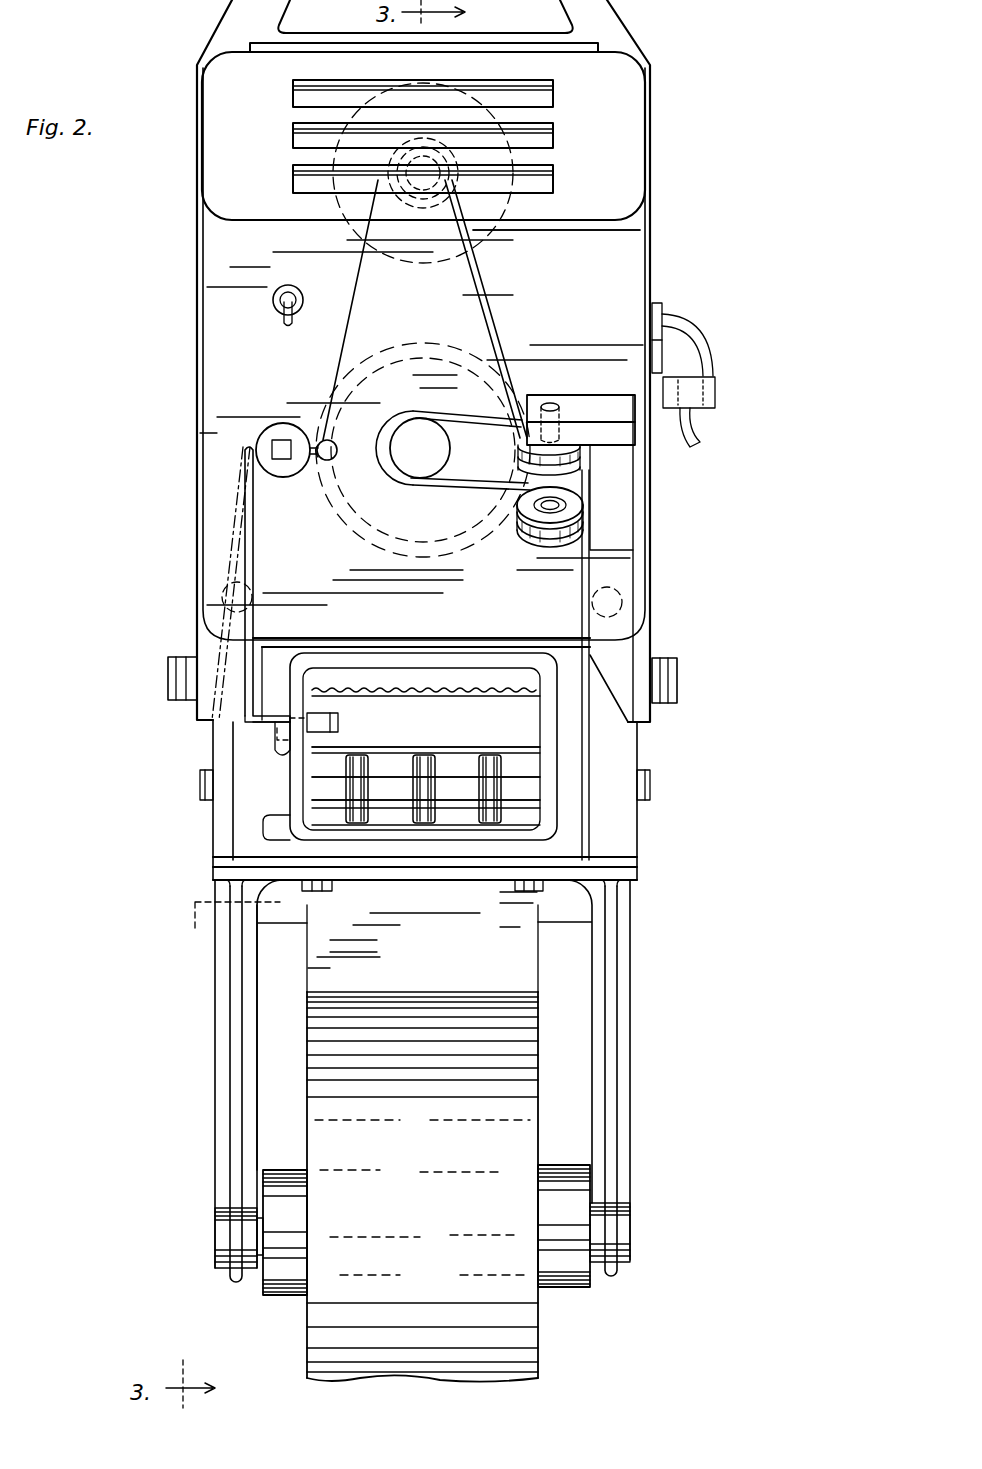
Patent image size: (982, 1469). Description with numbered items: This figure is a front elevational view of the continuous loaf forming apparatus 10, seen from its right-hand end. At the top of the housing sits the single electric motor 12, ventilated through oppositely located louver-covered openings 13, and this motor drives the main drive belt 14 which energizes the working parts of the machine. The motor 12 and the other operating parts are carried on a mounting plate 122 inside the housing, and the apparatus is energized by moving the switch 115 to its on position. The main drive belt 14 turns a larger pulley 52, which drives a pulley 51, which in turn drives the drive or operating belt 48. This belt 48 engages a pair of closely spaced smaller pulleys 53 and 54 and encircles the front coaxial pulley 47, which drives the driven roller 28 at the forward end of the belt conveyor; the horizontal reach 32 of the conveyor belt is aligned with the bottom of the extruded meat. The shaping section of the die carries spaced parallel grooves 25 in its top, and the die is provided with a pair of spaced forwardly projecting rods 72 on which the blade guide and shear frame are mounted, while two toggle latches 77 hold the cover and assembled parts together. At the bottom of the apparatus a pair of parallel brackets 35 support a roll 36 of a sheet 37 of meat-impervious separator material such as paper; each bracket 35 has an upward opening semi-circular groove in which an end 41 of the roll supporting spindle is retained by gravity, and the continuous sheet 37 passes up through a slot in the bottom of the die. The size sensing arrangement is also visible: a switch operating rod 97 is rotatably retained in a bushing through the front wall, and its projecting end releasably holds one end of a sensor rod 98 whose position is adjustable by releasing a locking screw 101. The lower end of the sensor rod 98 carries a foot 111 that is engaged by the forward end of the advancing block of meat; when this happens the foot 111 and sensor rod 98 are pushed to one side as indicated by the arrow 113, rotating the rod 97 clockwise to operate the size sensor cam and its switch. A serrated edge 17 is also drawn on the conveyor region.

The loaf forming apparatus 10 is at (678, 252).
The electric motor 12 is at (527, 208).
The louver-covered openings 13 is at (545, 183).
The main drive belt 14 is at (497, 318).
The serrated edge 17 is at (406, 690).
The grooves 25 is at (426, 730).
The driven roller 28 is at (463, 766).
The horizontal reach 32 is at (362, 823).
The brackets 35 is at (215, 1058).
The roll 36 is at (450, 1158).
The sheet 37 is at (508, 750).
The end of roll supporting spindle 41 is at (262, 1225).
The coaxial pulley 47 is at (650, 790).
The drive belt 48 is at (497, 420).
The pulley 51 is at (416, 430).
The larger pulley 52 is at (425, 345).
The smaller pulley 53 is at (518, 450).
The smaller pulley 54 is at (518, 535).
The forwardly projecting rods 72 is at (222, 592).
The toggle latches 77 is at (168, 688).
The switch operating rod 97 is at (280, 440).
The sensor rod 98 is at (248, 575).
The locking screw 101 is at (333, 443).
The foot 111 is at (338, 724).
The arrow 113 is at (219, 553).
The switch 115 is at (300, 290).
The mounting plate 122 is at (605, 272).